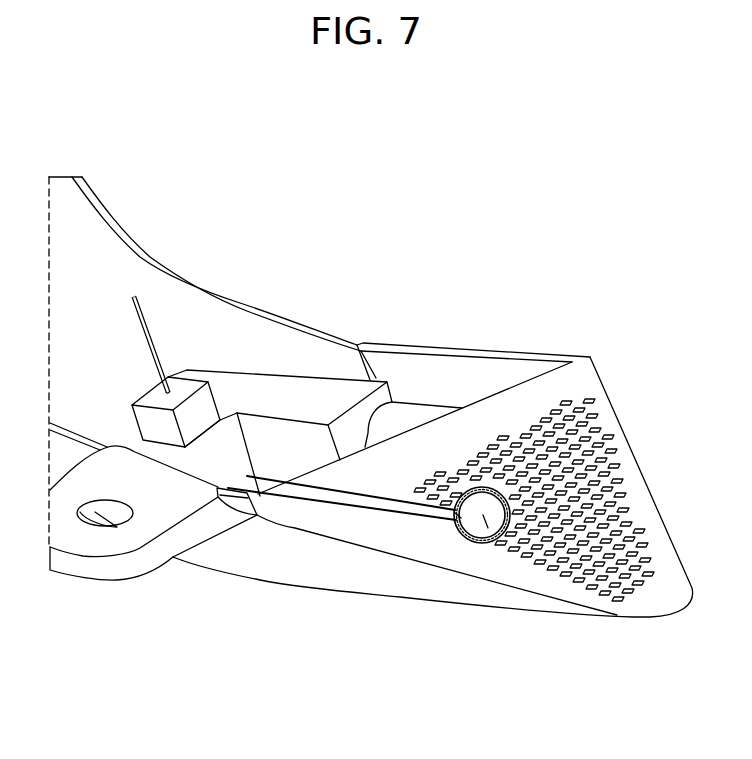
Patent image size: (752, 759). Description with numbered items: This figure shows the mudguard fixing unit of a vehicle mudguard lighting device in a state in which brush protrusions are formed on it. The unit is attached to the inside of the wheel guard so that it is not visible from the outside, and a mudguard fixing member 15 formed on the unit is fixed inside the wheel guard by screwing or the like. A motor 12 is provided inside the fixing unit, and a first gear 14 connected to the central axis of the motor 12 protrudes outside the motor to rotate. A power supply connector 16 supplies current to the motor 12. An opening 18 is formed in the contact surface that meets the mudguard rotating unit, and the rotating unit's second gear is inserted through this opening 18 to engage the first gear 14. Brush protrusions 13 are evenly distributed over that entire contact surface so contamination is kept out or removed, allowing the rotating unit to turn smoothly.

The motor 12 is at (295, 390).
The brush protrusion 13 is at (603, 427).
The first gear 14 is at (413, 417).
The mudguard fixing member 15 is at (115, 567).
The power supply connector 16 is at (222, 447).
The opening 18 is at (495, 544).